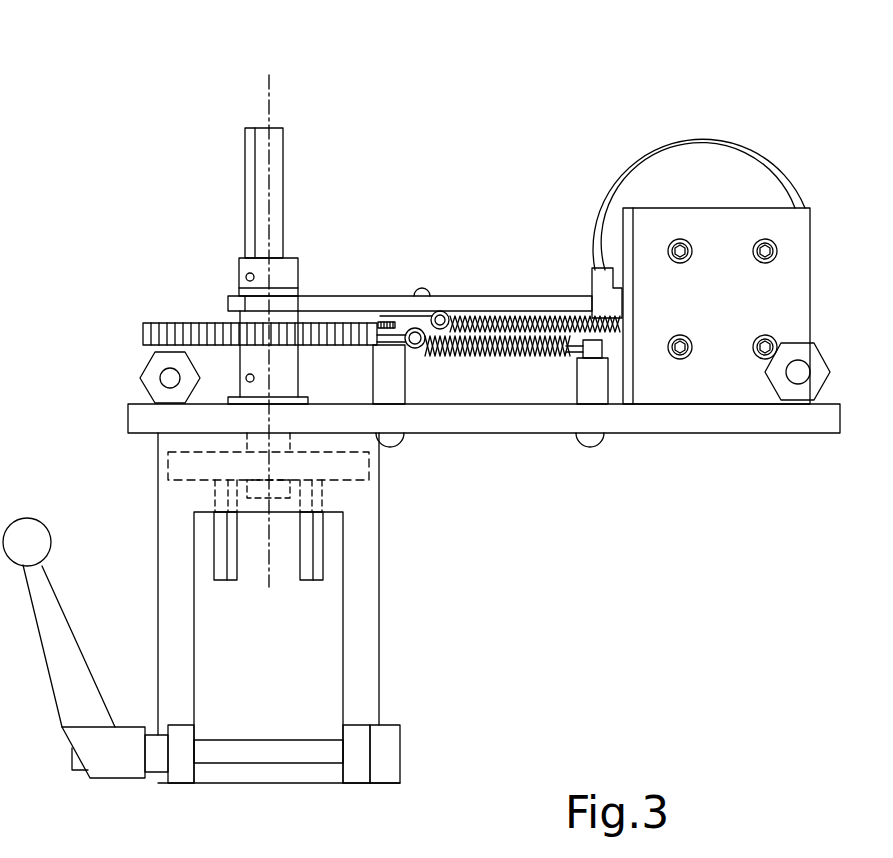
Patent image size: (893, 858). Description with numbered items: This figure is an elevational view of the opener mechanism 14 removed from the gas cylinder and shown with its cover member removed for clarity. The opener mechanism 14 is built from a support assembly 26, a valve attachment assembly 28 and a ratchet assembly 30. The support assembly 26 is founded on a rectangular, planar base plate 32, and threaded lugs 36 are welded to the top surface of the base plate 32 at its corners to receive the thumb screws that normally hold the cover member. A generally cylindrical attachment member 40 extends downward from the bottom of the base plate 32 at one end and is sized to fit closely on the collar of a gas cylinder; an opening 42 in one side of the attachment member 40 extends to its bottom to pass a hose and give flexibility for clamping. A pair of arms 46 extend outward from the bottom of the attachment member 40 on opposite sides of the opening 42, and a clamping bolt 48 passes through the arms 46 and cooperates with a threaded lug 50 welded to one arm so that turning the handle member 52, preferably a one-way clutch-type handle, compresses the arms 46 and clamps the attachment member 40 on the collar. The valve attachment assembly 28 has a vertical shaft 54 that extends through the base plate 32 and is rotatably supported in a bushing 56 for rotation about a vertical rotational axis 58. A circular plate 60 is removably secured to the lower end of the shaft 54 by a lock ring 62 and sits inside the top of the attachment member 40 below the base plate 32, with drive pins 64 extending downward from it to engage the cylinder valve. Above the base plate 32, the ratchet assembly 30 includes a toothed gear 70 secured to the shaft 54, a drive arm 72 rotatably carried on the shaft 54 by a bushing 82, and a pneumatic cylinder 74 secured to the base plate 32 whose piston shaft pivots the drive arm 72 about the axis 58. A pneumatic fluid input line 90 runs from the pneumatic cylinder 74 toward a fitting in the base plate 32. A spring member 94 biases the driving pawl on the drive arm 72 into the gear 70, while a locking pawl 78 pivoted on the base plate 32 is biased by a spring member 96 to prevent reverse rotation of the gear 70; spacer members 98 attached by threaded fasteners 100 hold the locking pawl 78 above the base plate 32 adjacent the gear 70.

The opener mechanism 14 is at (100, 172).
The support assembly 26 is at (747, 433).
The valve attachment assembly 28 is at (323, 550).
The ratchet assembly 30 is at (487, 291).
The base plate 32 is at (797, 433).
The threaded lugs 36 is at (140, 377).
The attachment member 40 is at (379, 653).
The opening 42 is at (345, 678).
The arms 46 is at (183, 783).
The clamping bolt 48 is at (267, 763).
The threaded lug 50 is at (400, 752).
The handle member 52 is at (58, 598).
The shaft 54 is at (283, 182).
The bushing 56 is at (245, 397).
The vertical rotational axis 58 is at (268, 90).
The circular plate 60 is at (369, 475).
The lock ring 62 is at (250, 480).
The drive pins 64 is at (323, 568).
The gear 70 is at (213, 322).
The drive arm 72 is at (553, 295).
The pneumatic cylinder 74 is at (730, 208).
The locking pawl 78 is at (375, 323).
The bushing 82 is at (276, 296).
The pneumatic fluid input line 90 is at (682, 130).
The spring member 94 is at (557, 350).
The spring member 96 is at (523, 350).
The spacer members 98 is at (407, 377).
The threaded fasteners 100 is at (400, 447).